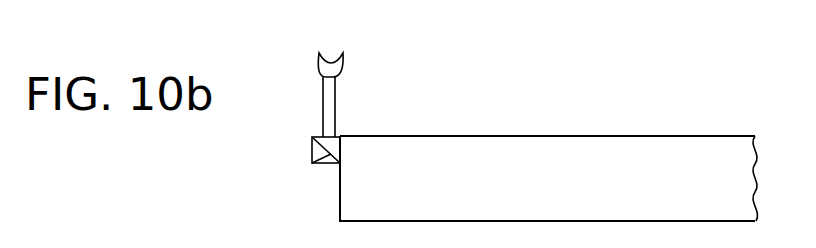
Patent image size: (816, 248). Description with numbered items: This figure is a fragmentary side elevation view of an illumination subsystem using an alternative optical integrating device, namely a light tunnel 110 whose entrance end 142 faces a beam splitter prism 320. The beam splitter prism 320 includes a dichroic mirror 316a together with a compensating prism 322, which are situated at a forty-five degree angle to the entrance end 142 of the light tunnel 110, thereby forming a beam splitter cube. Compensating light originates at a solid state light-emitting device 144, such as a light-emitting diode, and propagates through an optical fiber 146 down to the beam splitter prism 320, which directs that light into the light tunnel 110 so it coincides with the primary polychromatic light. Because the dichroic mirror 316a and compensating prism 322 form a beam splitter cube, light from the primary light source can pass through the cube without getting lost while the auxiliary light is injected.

The light tunnel 110 is at (663, 136).
The entrance end 142 is at (340, 197).
The solid state light-emitting device 144 is at (333, 55).
The optical fiber 146 is at (336, 112).
The dichroic mirror 316a is at (312, 164).
The beam splitter prism 320 is at (306, 121).
The compensating prism 322 is at (311, 149).